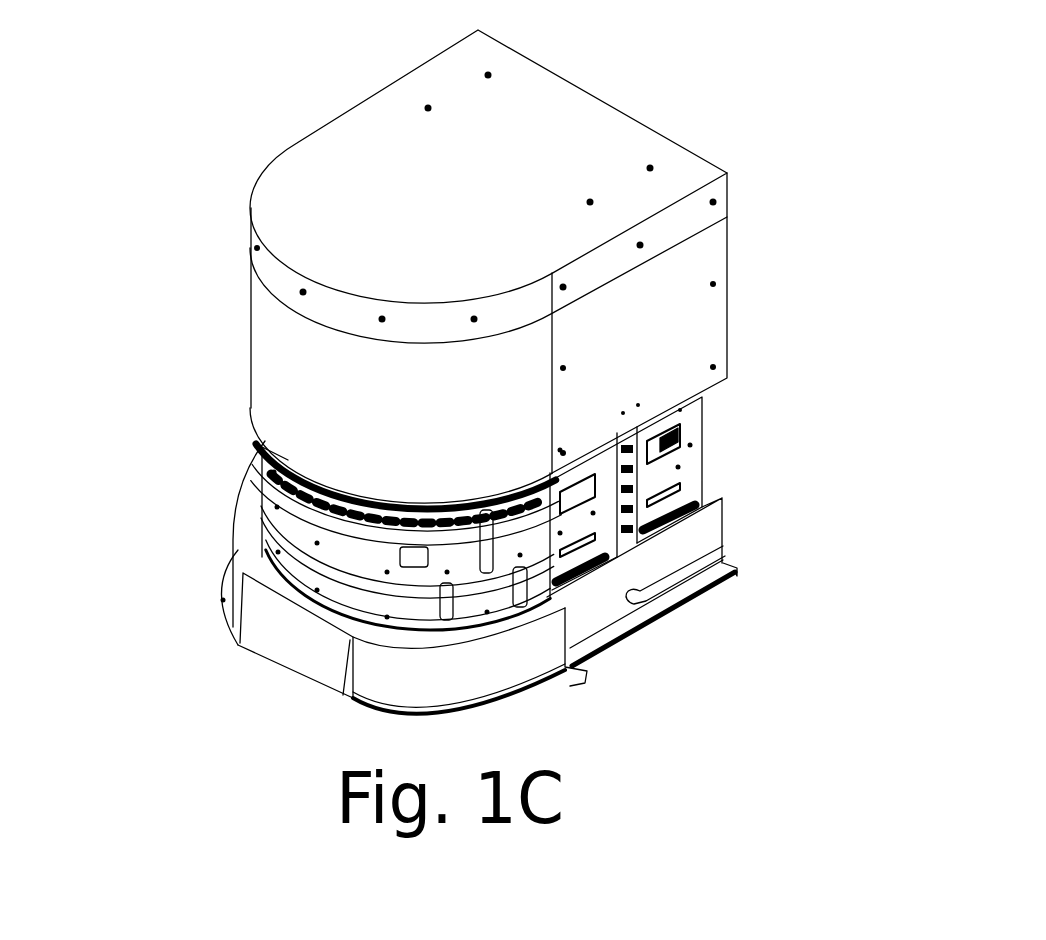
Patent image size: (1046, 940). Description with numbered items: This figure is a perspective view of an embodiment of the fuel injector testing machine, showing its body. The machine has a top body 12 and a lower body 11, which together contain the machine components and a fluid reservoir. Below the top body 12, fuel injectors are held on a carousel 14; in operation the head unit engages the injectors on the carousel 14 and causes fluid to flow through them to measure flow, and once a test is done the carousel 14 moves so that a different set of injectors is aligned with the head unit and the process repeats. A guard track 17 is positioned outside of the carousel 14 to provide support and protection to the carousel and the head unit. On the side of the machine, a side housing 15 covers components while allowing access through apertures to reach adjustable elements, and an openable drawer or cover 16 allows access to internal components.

The lower body 11 is at (290, 623).
The top body 12 is at (295, 368).
The carousel 14 is at (285, 495).
The side housing 15 is at (687, 420).
The openable drawer or cover 16 is at (707, 525).
The guard track 17 is at (288, 520).